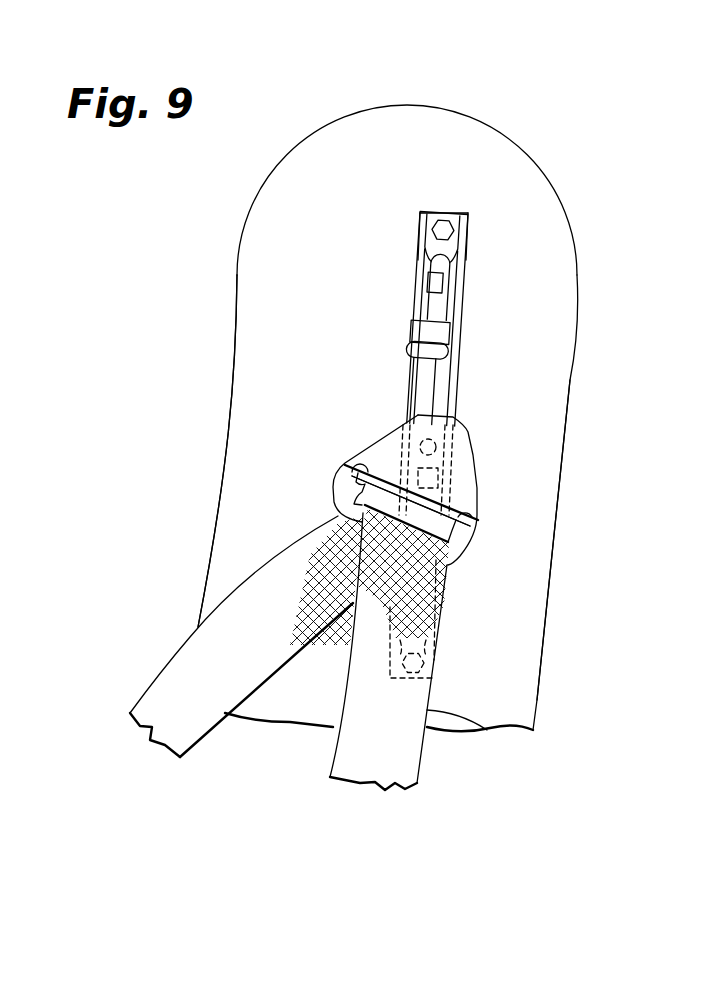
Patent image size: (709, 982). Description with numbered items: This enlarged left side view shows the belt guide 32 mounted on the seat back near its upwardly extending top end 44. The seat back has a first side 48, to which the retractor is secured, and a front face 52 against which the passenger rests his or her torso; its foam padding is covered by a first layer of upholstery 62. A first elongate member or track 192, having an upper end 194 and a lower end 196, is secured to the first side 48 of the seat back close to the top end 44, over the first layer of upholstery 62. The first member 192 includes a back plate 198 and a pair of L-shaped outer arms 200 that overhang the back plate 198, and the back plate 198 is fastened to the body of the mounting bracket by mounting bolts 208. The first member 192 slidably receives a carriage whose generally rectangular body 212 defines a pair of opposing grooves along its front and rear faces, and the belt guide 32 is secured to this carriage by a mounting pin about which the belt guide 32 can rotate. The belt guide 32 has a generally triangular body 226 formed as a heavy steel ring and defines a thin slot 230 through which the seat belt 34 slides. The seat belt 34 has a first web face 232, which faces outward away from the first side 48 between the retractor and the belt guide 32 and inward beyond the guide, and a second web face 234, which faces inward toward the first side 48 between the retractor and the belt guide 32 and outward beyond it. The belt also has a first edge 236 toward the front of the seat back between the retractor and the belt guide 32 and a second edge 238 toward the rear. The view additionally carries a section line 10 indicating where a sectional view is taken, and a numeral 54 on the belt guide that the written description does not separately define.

The section line 10- 10 is at (445, 195).
The belt guide 32 is at (390, 481).
The seat belt 34 is at (214, 636).
The top end 44 is at (512, 142).
The first side 48 is at (532, 342).
The front face 52 is at (262, 314).
The buckle housing 54 is at (463, 427).
The first layer of upholstery 62 is at (477, 478).
The first elongate member 192 is at (399, 313).
The upper end 194 is at (468, 216).
The lower end 196 is at (438, 677).
The back plate 198 is at (417, 210).
The L-shaped outer arms 200 is at (447, 303).
The mounting bolts 208 is at (456, 226).
The carriage body 212 is at (417, 373).
The generally triangular body 226 is at (480, 505).
The thin slot 230 is at (336, 490).
The first web face 232 is at (436, 662).
The second web face 234 is at (183, 668).
The first edge 236 is at (330, 750).
The second edge 238 is at (487, 730).